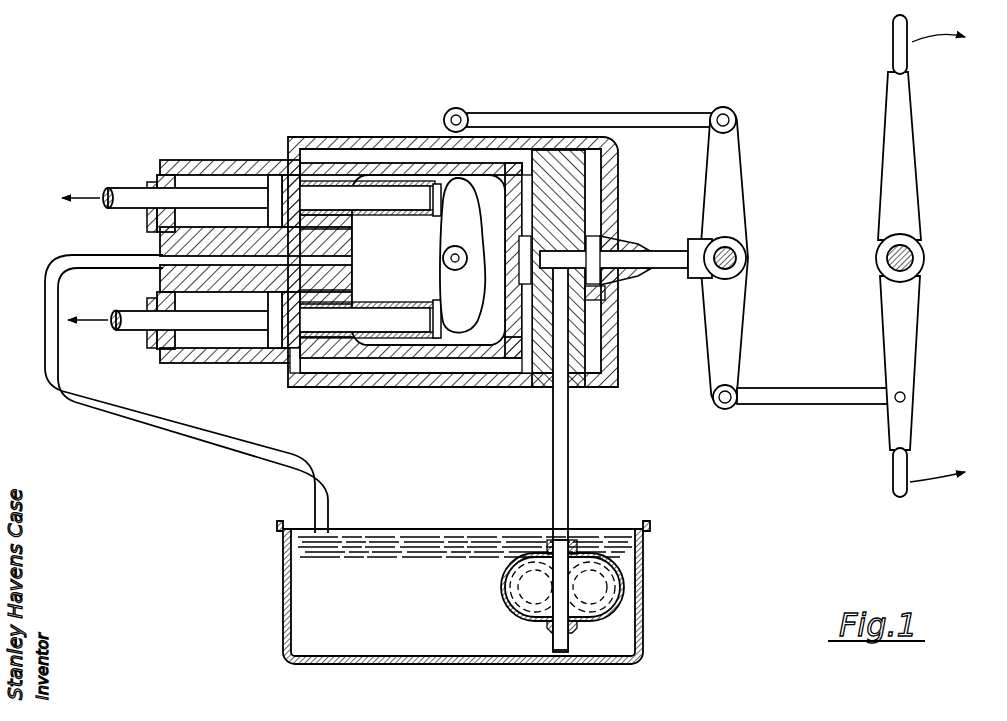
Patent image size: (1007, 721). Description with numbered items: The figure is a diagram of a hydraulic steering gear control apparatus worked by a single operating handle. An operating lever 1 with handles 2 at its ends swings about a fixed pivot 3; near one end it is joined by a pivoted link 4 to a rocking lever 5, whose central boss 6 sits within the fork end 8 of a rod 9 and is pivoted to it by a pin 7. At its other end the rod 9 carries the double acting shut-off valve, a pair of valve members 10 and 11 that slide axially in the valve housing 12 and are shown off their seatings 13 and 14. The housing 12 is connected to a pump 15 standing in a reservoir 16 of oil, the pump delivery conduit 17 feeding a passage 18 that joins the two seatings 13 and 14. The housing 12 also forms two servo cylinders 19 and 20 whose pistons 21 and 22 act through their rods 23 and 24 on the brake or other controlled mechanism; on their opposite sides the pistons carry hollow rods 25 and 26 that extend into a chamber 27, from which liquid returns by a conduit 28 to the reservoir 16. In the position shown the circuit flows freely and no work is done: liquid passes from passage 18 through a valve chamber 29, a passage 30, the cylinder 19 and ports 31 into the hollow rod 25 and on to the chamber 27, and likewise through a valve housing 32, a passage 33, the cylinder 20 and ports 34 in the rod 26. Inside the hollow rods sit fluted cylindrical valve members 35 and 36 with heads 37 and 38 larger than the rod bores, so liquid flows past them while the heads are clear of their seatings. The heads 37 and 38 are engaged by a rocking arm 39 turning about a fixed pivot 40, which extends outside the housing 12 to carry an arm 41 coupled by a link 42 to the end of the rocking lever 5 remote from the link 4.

The operating lever 1 is at (900, 190).
The handles 2 is at (897, 42).
The fixed pivot 3 is at (913, 258).
The pivoted link 4 is at (806, 398).
The rocking lever 5 is at (730, 344).
The central boss 6 is at (748, 262).
The pin 7 is at (742, 246).
The fork end 8 is at (700, 277).
The rod 9 is at (642, 252).
The valve member 10 is at (596, 238).
The valve member 11 is at (465, 302).
The valve housing 12 is at (616, 162).
The seating 13 is at (598, 296).
The seating 14 is at (527, 366).
The pump 15 is at (503, 588).
The reservoir 16 is at (640, 600).
The pump delivery conduit 17 is at (565, 467).
The passage 18 is at (560, 200).
The servo cylinder 19 is at (208, 182).
The servo cylinder 20 is at (218, 340).
The piston 21 is at (277, 188).
The piston 22 is at (277, 362).
The piston rod 23 is at (124, 200).
The piston rod 24 is at (137, 325).
The hollow piston rod 25 is at (375, 188).
The hollow piston rod 26 is at (375, 322).
The chamber 27 is at (470, 345).
The return conduit 28 is at (52, 378).
The valve chamber 29 is at (620, 283).
The passage 30 is at (500, 162).
The ports 31 is at (316, 165).
The valve housing 32 is at (548, 195).
The passage 33 is at (432, 368).
The ports 34 is at (306, 358).
The cylindrical valve member 35 is at (423, 180).
The cylindrical valve member 36 is at (353, 320).
The head 37 is at (437, 214).
The head 38 is at (440, 306).
The rocking arm 39 is at (462, 228).
The fixed pivot 40 is at (443, 258).
The arm 41 is at (452, 108).
The link 42 is at (642, 113).